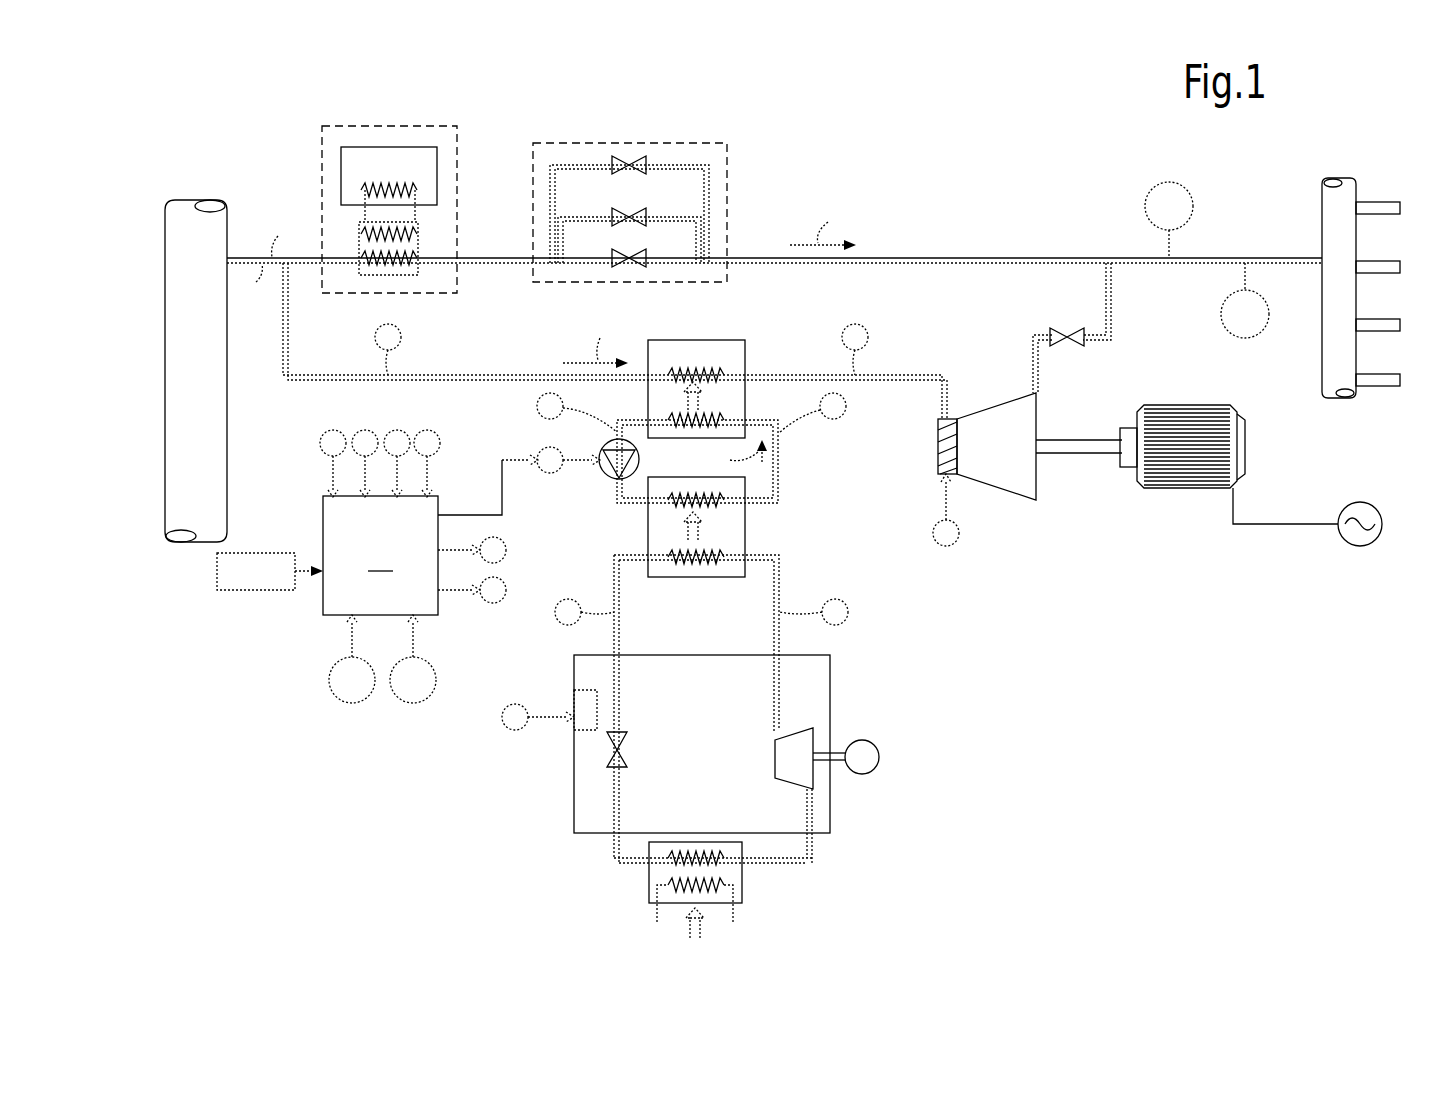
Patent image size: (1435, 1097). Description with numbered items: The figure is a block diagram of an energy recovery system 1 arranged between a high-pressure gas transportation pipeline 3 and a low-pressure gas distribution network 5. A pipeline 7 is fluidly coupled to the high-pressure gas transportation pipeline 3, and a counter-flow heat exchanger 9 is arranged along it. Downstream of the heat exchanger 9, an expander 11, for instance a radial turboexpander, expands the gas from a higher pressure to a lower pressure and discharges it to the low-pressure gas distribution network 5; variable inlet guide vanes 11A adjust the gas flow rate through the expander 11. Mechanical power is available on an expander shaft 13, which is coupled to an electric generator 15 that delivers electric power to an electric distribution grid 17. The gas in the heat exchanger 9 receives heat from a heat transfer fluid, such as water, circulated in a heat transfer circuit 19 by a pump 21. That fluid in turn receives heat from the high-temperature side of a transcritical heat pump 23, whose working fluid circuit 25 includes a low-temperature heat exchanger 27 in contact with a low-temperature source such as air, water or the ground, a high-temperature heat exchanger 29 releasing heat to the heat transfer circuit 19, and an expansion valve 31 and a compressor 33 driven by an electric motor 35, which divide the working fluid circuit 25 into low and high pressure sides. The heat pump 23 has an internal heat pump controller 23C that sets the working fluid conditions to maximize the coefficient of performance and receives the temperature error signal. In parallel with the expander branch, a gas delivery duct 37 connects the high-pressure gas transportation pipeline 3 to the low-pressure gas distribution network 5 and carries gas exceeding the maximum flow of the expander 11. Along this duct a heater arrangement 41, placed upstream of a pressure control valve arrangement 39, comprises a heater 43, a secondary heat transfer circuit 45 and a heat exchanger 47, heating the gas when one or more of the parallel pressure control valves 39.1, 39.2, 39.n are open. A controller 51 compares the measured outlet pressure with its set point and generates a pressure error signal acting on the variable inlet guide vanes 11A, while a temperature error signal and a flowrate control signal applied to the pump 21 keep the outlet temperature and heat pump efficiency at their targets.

The system 1 is at (565, 855).
The high-pressure gas transportation pipeline 3 is at (180, 307).
The low-pressure gas distribution network 5 is at (1392, 176).
The pipeline 7 is at (536, 368).
The heat exchanger 9 is at (755, 345).
The expander 11 is at (960, 474).
The variable inlet guide vanes 11A is at (938, 450).
The expander shaft 13 is at (1070, 440).
The electric generator 15 is at (1162, 490).
The electric distribution grid 17 is at (1295, 525).
The heat transfer circuit 19 is at (691, 455).
The pump 21 is at (608, 475).
The heat pump 23 is at (712, 749).
The heat pump controller 23C is at (585, 697).
The working fluid circuit 25 is at (765, 707).
The low-temperature heat exchanger 27 is at (755, 872).
The high-temperature heat exchanger 29 is at (792, 537).
The expansion valve 31 is at (627, 752).
The compressor 33 is at (795, 763).
The electric motor 35 is at (868, 742).
The gas delivery duct 37 is at (912, 250).
The pressure control valve arrangement 39 is at (672, 186).
The pressure control valve 39.1 is at (620, 255).
The pressure control valve 39.2 is at (620, 213).
The pressure control valve 39.n is at (618, 160).
The heater arrangement 41 is at (387, 234).
The heater 43 is at (341, 178).
The secondary heat transfer circuit 45 is at (420, 210).
The heat exchanger 47 is at (420, 242).
The controller 51 is at (408, 566).